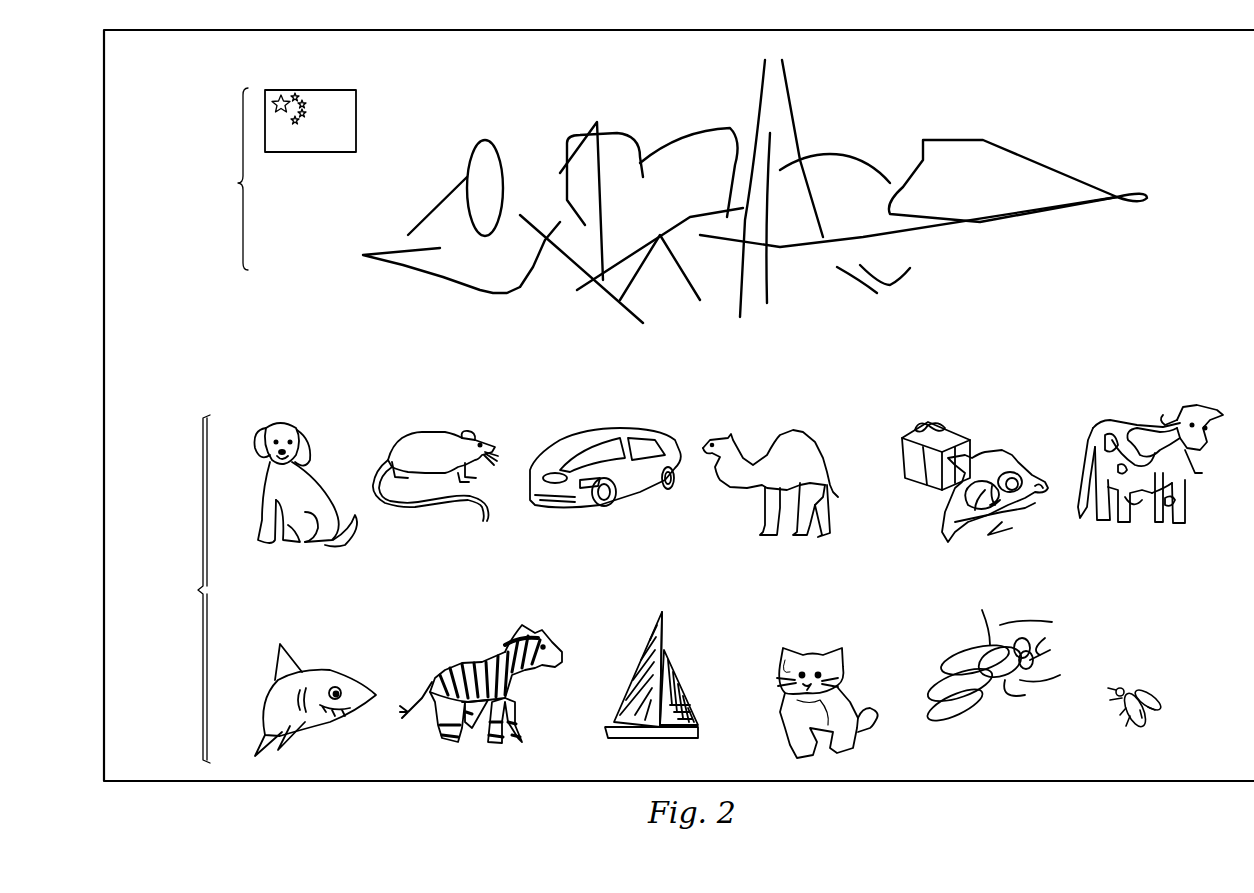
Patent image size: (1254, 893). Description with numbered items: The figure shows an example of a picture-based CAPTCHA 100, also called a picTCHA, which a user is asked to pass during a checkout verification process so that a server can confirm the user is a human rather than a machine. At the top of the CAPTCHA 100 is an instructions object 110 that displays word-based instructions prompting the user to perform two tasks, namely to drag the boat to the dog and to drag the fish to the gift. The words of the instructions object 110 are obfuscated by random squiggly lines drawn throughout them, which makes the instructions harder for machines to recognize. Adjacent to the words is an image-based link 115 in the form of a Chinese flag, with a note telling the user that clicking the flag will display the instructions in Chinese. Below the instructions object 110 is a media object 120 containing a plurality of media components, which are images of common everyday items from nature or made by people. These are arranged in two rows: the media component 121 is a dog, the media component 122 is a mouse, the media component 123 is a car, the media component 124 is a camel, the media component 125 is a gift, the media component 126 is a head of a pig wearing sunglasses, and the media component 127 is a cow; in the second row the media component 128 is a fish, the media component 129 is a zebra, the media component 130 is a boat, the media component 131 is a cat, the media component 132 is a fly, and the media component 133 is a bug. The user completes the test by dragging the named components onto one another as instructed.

The CAPTCHA 100 is at (1144, 111).
The instructions object 110 is at (671, 191).
The image-based link 115 is at (310, 90).
The media object 120 is at (184, 589).
The media component 121 is at (276, 420).
The media component 122 is at (430, 432).
The media component 123 is at (615, 428).
The media component 124 is at (770, 433).
The media component 125 is at (905, 428).
The media component 126 is at (1020, 470).
The media component 127 is at (1190, 405).
The media component 128 is at (320, 668).
The media component 129 is at (466, 660).
The media component 130 is at (645, 640).
The media component 131 is at (818, 650).
The media component 132 is at (962, 650).
The media component 133 is at (1140, 700).